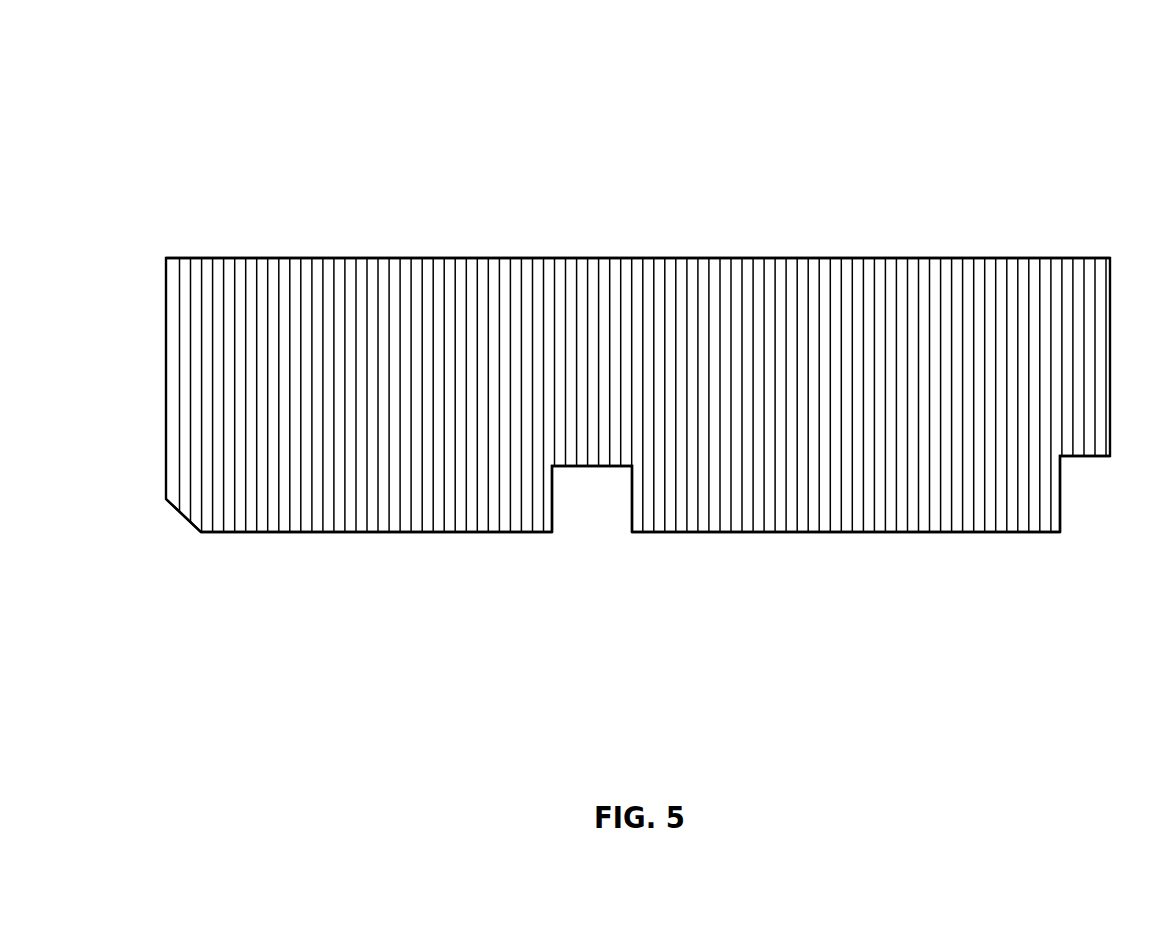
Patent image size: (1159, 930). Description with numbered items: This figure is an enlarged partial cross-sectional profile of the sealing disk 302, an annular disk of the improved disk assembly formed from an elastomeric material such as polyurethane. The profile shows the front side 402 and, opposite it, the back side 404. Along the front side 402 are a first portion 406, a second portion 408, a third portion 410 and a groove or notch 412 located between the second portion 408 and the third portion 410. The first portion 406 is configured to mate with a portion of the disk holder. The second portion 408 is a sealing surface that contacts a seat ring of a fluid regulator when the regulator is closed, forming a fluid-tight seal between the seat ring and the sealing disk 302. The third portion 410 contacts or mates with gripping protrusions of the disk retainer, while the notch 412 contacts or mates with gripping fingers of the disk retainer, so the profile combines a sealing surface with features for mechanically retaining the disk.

The sealing disk 302 is at (982, 66).
The front side 402 is at (733, 524).
The back side 404 is at (687, 250).
The first portion 406 is at (1073, 448).
The second portion 408 is at (847, 524).
The third portion 410 is at (347, 524).
The notch 412 is at (575, 458).